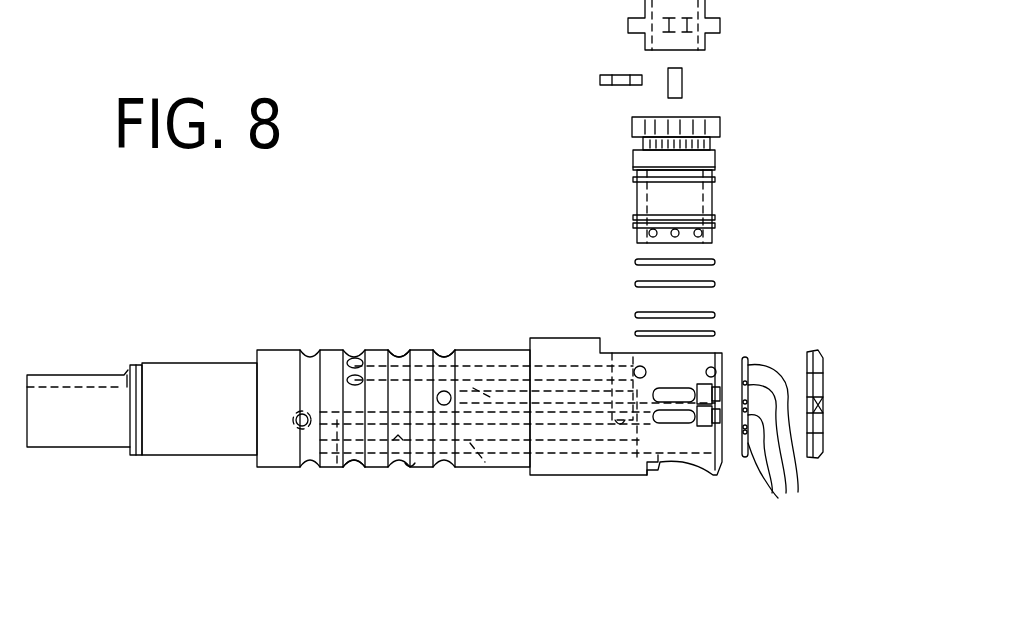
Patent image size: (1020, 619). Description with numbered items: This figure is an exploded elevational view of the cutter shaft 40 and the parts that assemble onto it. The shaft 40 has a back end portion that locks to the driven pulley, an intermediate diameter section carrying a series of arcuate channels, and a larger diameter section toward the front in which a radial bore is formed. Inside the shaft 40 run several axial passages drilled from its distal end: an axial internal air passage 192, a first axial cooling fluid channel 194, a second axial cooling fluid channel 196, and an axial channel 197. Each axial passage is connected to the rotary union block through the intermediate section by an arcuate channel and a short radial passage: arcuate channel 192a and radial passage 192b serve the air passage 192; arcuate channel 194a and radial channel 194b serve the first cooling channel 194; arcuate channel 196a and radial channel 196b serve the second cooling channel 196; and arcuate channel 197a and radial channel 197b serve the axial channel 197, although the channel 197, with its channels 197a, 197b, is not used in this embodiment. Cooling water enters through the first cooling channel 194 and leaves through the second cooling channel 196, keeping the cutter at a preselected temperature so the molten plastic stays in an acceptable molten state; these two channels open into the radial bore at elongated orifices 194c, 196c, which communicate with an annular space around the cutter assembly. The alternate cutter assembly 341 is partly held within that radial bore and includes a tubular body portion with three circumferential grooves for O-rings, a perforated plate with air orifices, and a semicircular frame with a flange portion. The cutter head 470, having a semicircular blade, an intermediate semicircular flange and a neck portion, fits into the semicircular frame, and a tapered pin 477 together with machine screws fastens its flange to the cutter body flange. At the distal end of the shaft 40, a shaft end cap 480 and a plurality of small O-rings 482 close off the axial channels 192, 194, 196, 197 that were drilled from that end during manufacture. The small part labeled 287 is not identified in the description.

The cutter shaft 40 is at (558, 337).
The axial internal air passage 192 is at (478, 440).
The arcuate channel 192a is at (408, 465).
The short radial passage 192b is at (397, 440).
The axial cooling fluid channel 194 is at (338, 420).
The arcuate channel 194a is at (310, 350).
The radial channel 194b is at (302, 427).
The elongated orifice 194c is at (688, 430).
The second axial cooling fluid channel 196 is at (472, 362).
The arcuate channel 196a is at (447, 353).
The radial channel 196b is at (443, 407).
The elongated orifice 196c is at (677, 387).
The axial channel 197 is at (400, 358).
The arcuate channel 197a is at (357, 467).
The radial channel 197b is at (357, 358).
The key 287 is at (617, 75).
The alternate cutter assembly 341 is at (722, 157).
The cutter head 470 is at (713, 38).
The tapered pin 477 is at (682, 77).
The shaft end cap 480 is at (825, 395).
The small O-rings 482 is at (782, 440).